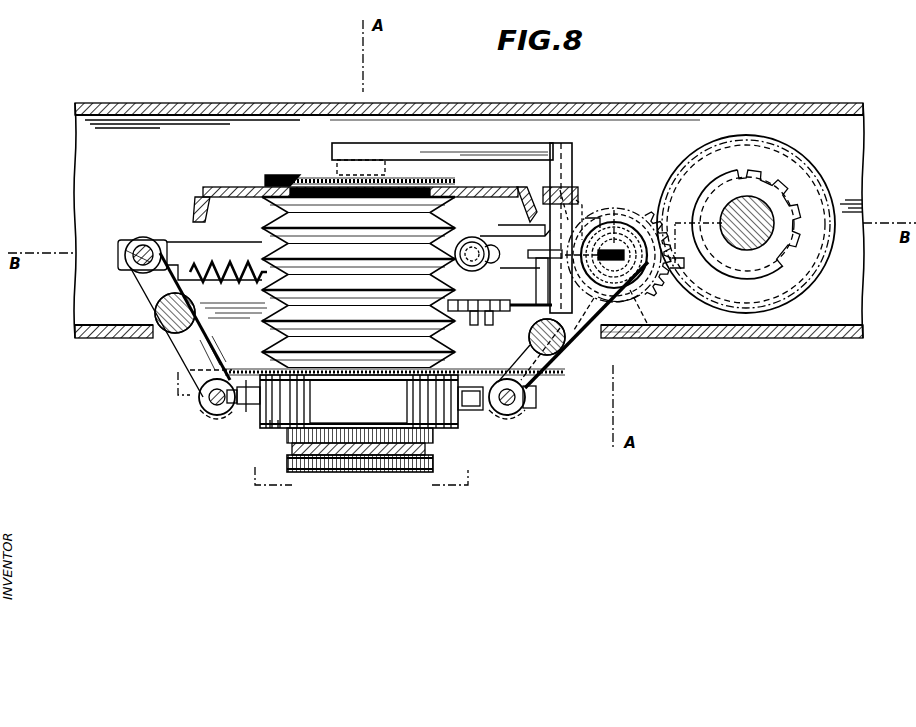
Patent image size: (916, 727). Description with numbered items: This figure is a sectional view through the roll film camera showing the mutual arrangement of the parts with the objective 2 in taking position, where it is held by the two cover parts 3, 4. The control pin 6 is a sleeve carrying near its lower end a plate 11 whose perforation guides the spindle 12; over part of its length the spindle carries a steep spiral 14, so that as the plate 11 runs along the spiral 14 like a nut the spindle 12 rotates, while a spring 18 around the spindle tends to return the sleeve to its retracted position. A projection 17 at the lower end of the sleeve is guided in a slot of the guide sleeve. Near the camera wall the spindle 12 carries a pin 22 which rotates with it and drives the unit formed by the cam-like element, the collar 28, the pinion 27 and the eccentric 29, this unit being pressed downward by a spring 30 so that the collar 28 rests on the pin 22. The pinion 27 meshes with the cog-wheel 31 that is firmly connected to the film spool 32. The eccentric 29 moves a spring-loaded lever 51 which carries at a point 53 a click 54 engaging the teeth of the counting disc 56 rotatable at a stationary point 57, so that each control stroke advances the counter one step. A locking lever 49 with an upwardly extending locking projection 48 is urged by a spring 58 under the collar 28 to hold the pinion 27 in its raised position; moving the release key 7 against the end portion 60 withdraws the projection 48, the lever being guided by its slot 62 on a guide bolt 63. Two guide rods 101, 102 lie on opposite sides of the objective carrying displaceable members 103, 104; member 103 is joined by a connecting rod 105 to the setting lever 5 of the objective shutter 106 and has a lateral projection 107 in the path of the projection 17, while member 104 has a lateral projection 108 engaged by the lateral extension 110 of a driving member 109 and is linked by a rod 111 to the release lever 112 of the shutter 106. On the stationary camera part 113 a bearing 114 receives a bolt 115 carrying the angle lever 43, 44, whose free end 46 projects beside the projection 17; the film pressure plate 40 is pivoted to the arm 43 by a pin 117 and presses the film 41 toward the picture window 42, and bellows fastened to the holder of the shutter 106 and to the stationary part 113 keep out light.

The objective 2 is at (342, 472).
The cover part 3 is at (208, 410).
The cover part 4 is at (507, 416).
The setting lever of the shutter 5 is at (453, 430).
The control pin 6 is at (654, 277).
The release key 7 is at (145, 238).
The plate 11 is at (646, 292).
The spindle 12 is at (626, 295).
The steep spiral 14 is at (626, 211).
The projection 17 is at (554, 359).
The spring 18 is at (604, 210).
The pin 22 is at (638, 335).
The pinion 27 is at (664, 226).
The collar 28 is at (584, 214).
The eccentric 29 is at (674, 264).
The spring 30 is at (643, 216).
The cog-wheel 31 is at (816, 187).
The film spool 32 is at (752, 210).
The film pressure plate 40 is at (274, 183).
The film 41 is at (243, 187).
The picture window 42 is at (306, 178).
The arm of angle lever 43 is at (401, 150).
The angle lever arm 44 is at (558, 145).
The free end of angle lever 46 is at (572, 338).
The locking projection 48 is at (548, 194).
The locking lever 49 is at (524, 230).
The lever 51 is at (530, 255).
The click pivot point 53 is at (514, 271).
The click 54 is at (524, 305).
The counting disc 56 is at (474, 318).
The stationary point 57 is at (490, 322).
The spring 58 is at (235, 265).
The end portion of locking lever 60 is at (124, 243).
The slot 62 is at (499, 244).
The guide bolt 63 is at (470, 237).
The guide rod 101 is at (516, 402).
The guide rod 102 is at (206, 399).
The displaceable member 103 is at (521, 410).
The displaceable member 104 is at (224, 412).
The connecting rod 105 is at (474, 411).
The objective shutter 106 is at (362, 472).
The lateral projection 107 is at (538, 393).
The lateral projection 108 is at (179, 340).
The driving member 109 is at (134, 264).
The lateral extension 110 is at (154, 295).
The rod 111 is at (250, 386).
The release lever 112 is at (275, 428).
The stationary camera part 113 is at (205, 199).
The bearing 114 is at (576, 198).
The bolt 115 is at (567, 185).
The pin 117 is at (347, 161).